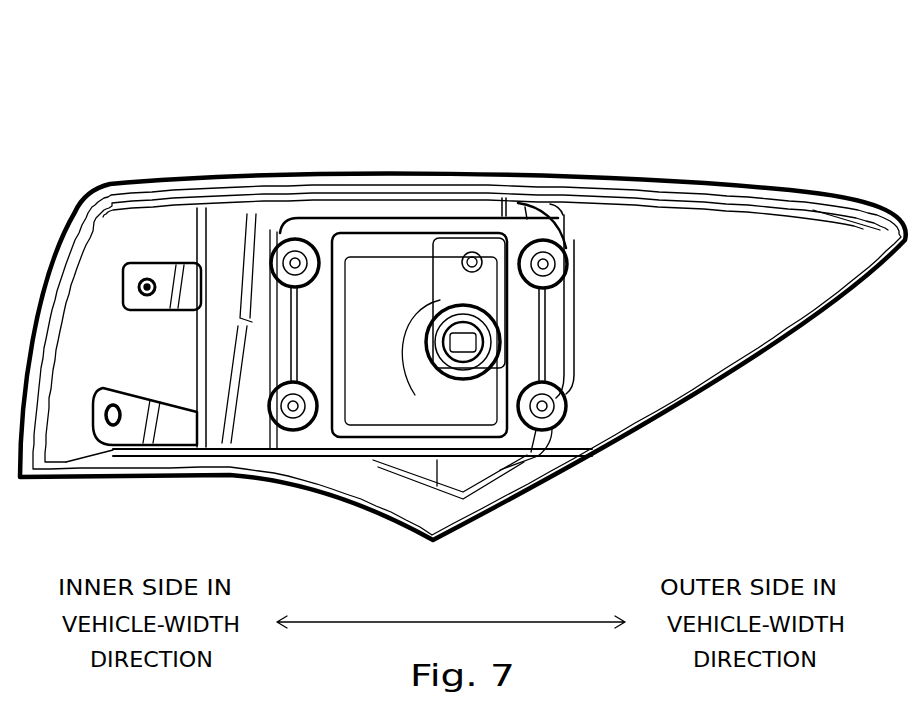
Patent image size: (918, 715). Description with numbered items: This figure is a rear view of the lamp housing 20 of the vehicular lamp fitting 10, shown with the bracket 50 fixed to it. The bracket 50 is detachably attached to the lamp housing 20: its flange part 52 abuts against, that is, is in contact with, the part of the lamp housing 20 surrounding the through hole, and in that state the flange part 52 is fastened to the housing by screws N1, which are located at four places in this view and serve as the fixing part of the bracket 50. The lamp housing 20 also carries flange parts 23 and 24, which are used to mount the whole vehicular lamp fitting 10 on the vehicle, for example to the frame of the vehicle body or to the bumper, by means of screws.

The vehicular lamp fitting 10 is at (461, 78).
The lamp housing 20 is at (403, 172).
The flange part 23 is at (122, 280).
The flange part 24 is at (93, 406).
The bracket 50 is at (451, 216).
The flange part 52 is at (503, 198).
The screws N1 is at (271, 263).